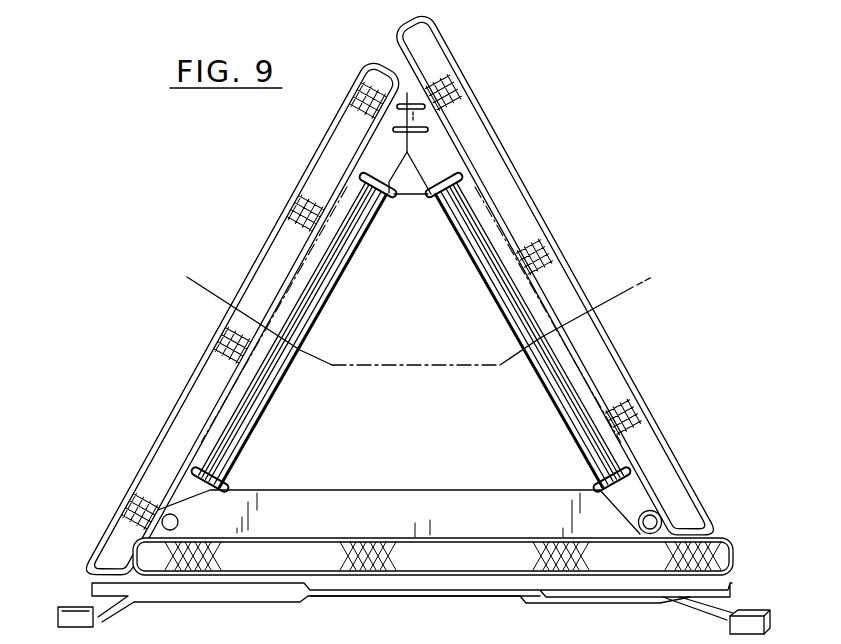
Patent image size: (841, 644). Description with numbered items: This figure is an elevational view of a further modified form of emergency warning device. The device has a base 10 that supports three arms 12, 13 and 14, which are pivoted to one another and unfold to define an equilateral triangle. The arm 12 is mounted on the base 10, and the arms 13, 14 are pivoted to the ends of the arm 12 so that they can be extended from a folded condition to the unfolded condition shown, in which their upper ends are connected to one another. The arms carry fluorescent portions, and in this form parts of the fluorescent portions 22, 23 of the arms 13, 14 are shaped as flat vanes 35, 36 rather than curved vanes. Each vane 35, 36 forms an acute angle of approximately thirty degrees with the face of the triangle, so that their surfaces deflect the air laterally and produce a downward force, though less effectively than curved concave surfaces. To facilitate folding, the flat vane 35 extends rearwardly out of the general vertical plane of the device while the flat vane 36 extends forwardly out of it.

The base 10 is at (237, 244).
The arm 12 is at (327, 552).
The arm 13 is at (196, 395).
The arm 14 is at (518, 218).
The fluorescent portion 22 is at (377, 161).
The fluorescent portion 23 is at (437, 162).
The flat vane 35 is at (313, 318).
The flat vane 36 is at (502, 295).